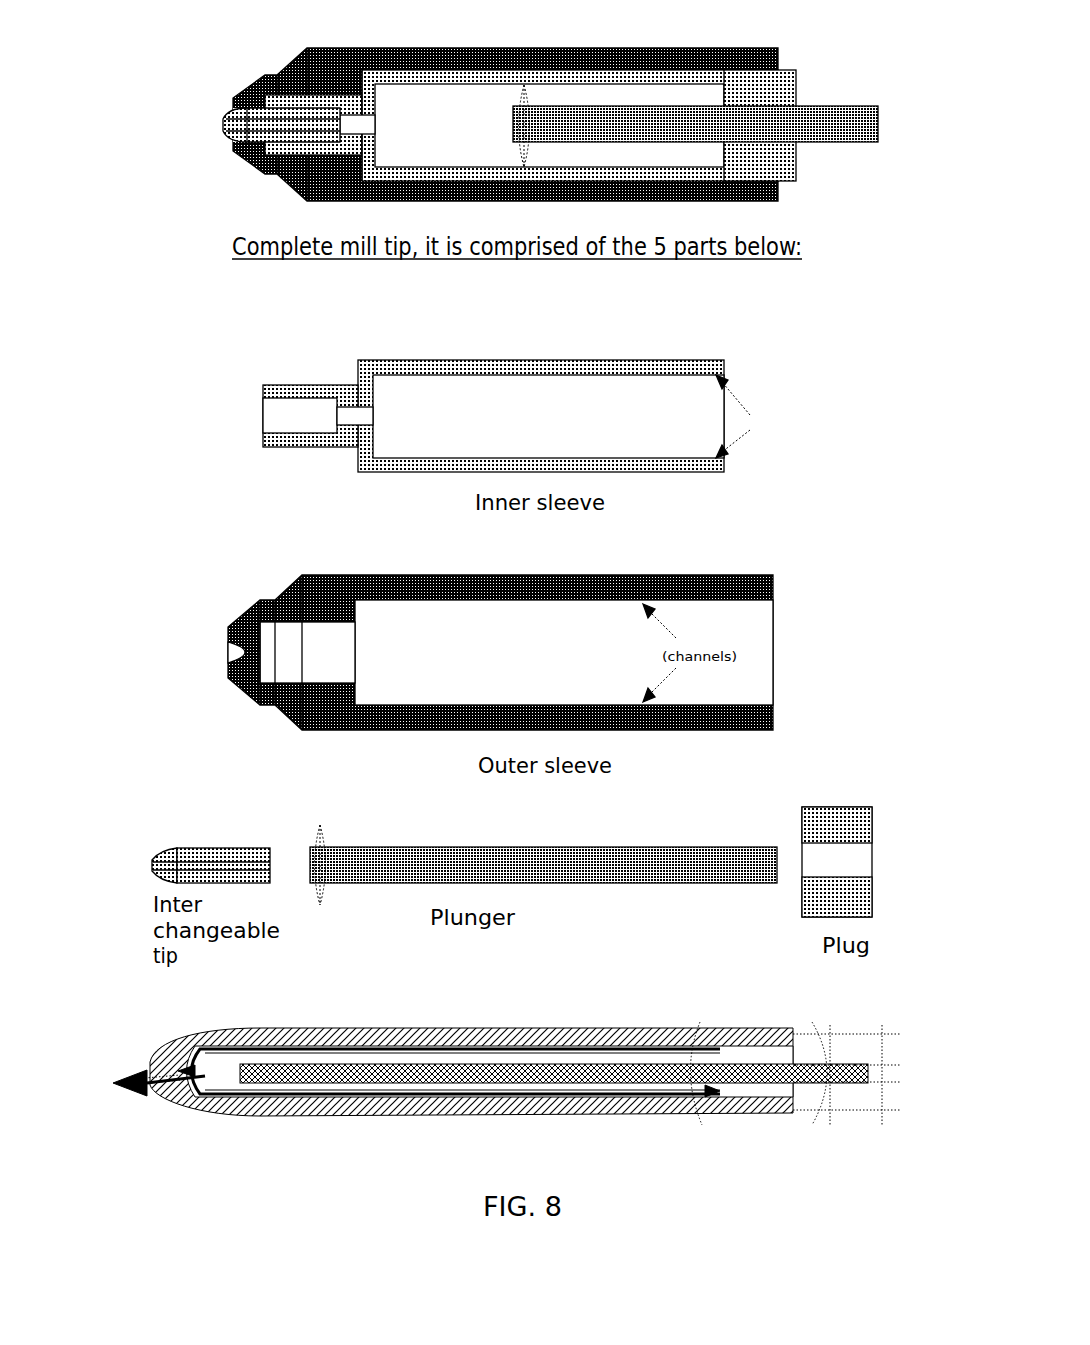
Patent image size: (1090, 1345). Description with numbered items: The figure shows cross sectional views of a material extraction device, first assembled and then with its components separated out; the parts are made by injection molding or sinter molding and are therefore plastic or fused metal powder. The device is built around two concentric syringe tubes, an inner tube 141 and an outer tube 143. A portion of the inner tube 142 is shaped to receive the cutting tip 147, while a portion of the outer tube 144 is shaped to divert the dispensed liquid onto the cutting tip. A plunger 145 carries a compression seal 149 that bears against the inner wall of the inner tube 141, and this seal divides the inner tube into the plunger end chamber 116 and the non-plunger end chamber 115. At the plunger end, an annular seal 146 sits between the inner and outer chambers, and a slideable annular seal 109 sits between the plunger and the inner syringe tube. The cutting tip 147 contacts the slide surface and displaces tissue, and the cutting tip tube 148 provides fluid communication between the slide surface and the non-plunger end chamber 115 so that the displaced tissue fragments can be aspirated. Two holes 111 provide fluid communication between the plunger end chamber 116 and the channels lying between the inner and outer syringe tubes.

The slideable annular seal 109 is at (830, 835).
The holes 111 is at (798, 416).
The non-plunger end chamber 115 is at (430, 100).
The plunger end chamber 116 is at (600, 105).
The inner tube 141 is at (585, 360).
The portion of the inner tube 142 is at (340, 392).
The outer tube 143 is at (418, 575).
The portion of the outer tube 144 is at (247, 610).
The plunger 145 is at (622, 845).
The annular seal 146 is at (820, 822).
The cutting tip 147 is at (153, 860).
The cutting tip tube 148 is at (218, 857).
The compression seal 149 is at (310, 830).